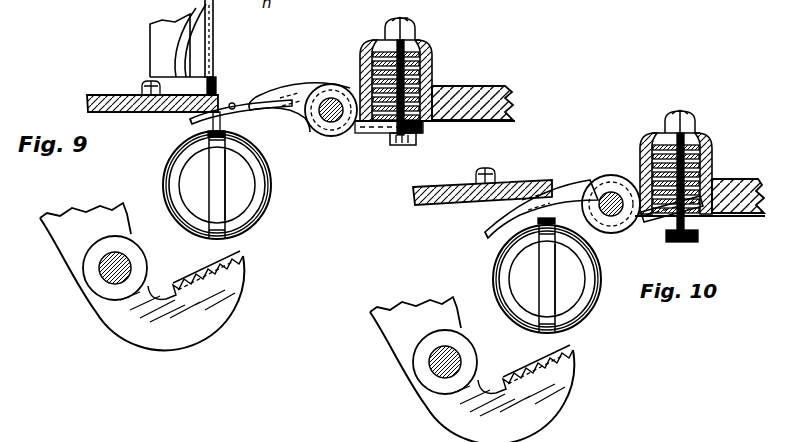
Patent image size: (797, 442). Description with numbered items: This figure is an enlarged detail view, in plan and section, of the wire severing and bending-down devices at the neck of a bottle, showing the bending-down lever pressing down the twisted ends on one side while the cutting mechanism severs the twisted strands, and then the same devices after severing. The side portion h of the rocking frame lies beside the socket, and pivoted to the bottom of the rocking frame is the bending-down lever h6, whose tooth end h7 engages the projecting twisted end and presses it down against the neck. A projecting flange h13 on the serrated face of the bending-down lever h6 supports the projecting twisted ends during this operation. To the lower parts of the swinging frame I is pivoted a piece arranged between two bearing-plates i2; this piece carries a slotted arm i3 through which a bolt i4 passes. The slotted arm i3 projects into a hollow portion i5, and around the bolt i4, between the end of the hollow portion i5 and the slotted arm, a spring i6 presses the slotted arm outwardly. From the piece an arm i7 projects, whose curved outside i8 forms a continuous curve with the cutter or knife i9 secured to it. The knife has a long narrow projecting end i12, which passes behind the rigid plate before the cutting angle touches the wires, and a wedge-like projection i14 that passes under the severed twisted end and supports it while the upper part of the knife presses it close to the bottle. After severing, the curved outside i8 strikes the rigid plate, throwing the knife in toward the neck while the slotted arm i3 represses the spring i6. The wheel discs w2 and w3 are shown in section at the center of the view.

In FIG. 9, the side portion of rocking frame h is at (104, 95).
In FIG. 10, the side portion of rocking frame h is at (450, 187).
In FIG. 9, the bending-down lever h6 is at (111, 265).
In FIG. 10, the bending-down lever h6 is at (438, 359).
In FIG. 9, the tooth end h7 is at (142, 276).
In FIG. 10, the tooth end h7 is at (472, 369).
In FIG. 9, the projecting flange h13 is at (192, 273).
In FIG. 10, the projecting flange h13 is at (525, 367).
In FIG. 9, the bearing-plates i2 is at (336, 136).
In FIG. 10, the bearing-plates i2 is at (608, 178).
In FIG. 9, the slotted arm i3 is at (373, 135).
In FIG. 10, the slotted arm i3 is at (671, 219).
In FIG. 9, the bolt i4 is at (418, 138).
In FIG. 9, the hollow portion i5 is at (361, 72).
In FIG. 10, the hollow portion i5 is at (700, 177).
In FIG. 9, the spring i6 is at (375, 44).
In FIG. 10, the spring i6 is at (670, 124).
In FIG. 9, the arm i7 is at (290, 97).
In FIG. 10, the arm i7 is at (549, 200).
In FIG. 9, the curved outside of arm i8 is at (300, 88).
In FIG. 10, the curved outside of arm i8 is at (578, 188).
In FIG. 9, the cutter or knife i9 is at (233, 104).
In FIG. 9, the narrow projecting end of knife i12 is at (191, 124).
In FIG. 10, the narrow projecting end of knife i12 is at (480, 224).
In FIG. 9, the wedge-like projection i14 is at (235, 111).
In FIG. 9, the wheel disc w2 is at (209, 186).
In FIG. 10, the wheel disc w2 is at (547, 279).
In FIG. 9, the wheel disc w3 is at (225, 186).
In FIG. 10, the wheel disc w3 is at (568, 279).
In FIG. 9, the swinging frame I is at (472, 121).
In FIG. 10, the swinging frame I is at (738, 183).